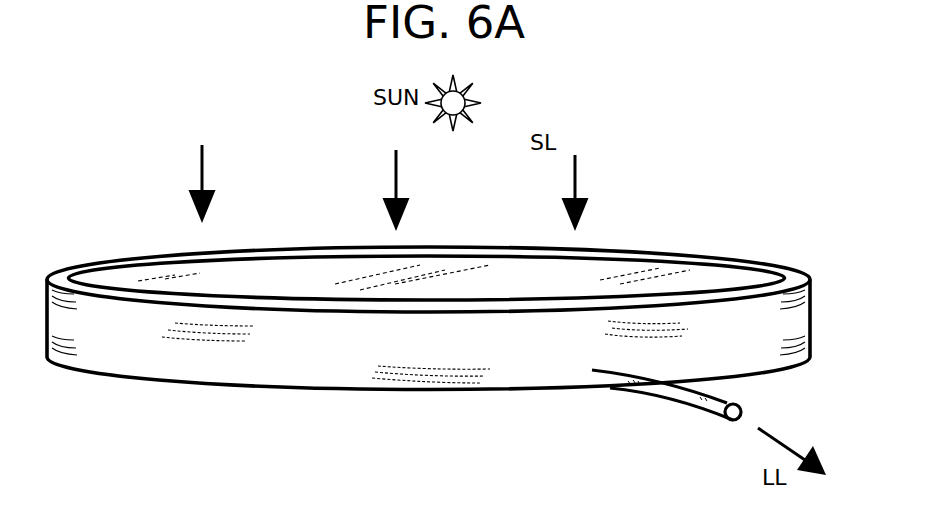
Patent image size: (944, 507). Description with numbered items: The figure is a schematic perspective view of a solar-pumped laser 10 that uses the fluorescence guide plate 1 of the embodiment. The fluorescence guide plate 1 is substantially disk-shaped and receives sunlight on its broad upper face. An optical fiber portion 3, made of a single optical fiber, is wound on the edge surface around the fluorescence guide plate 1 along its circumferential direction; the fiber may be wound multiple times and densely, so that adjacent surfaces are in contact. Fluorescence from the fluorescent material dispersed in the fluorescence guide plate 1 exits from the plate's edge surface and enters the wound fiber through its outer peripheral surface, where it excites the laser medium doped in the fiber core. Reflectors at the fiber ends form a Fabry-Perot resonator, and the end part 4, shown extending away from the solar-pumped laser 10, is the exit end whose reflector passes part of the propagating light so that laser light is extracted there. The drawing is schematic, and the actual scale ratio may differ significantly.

The solar-pumped laser 10 is at (113, 223).
The fluorescence guide plate 1 is at (332, 273).
The optical fiber portion 3 is at (797, 270).
The end part 4 is at (683, 400).